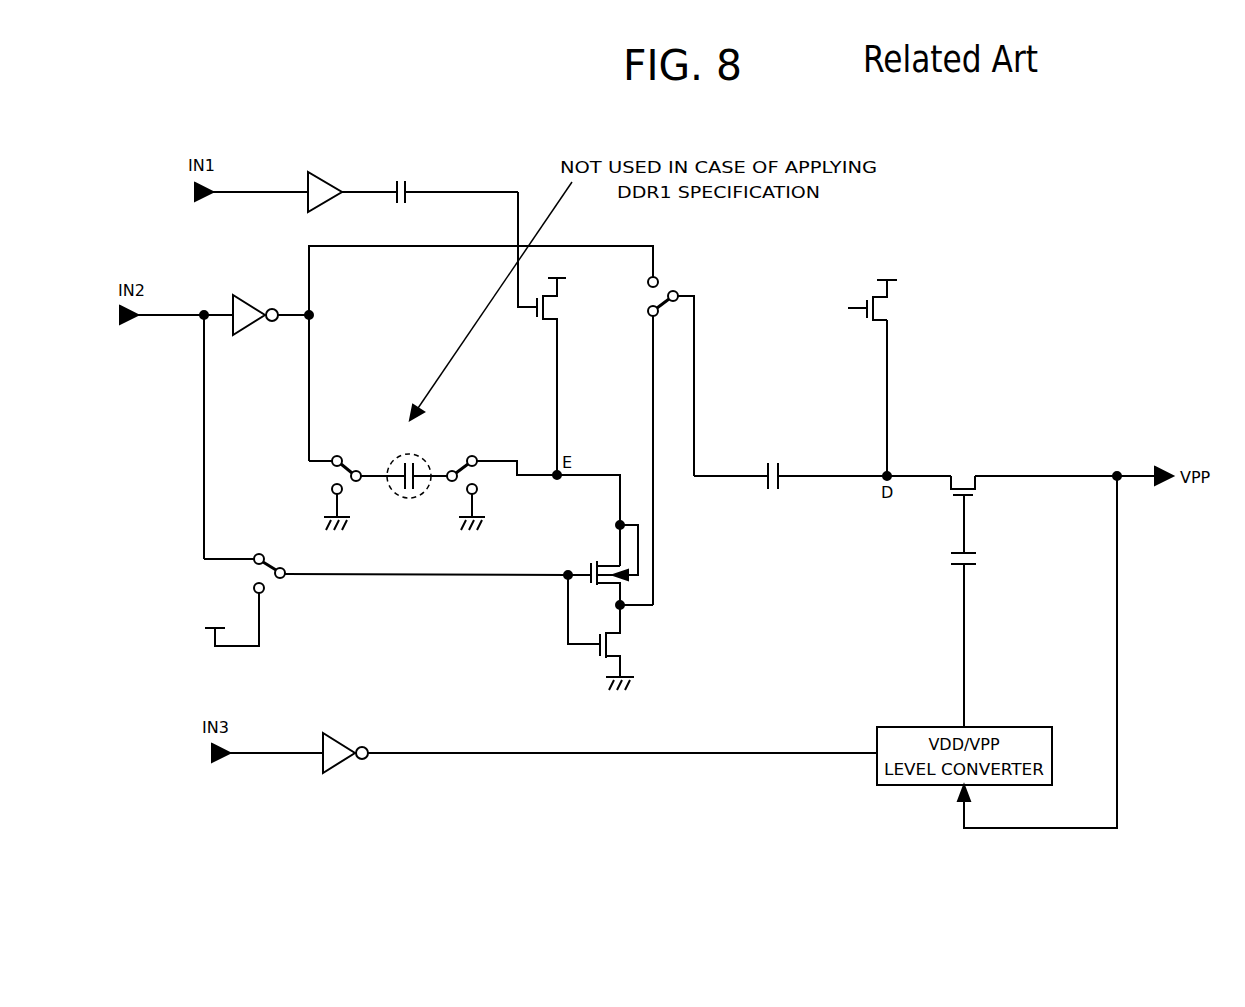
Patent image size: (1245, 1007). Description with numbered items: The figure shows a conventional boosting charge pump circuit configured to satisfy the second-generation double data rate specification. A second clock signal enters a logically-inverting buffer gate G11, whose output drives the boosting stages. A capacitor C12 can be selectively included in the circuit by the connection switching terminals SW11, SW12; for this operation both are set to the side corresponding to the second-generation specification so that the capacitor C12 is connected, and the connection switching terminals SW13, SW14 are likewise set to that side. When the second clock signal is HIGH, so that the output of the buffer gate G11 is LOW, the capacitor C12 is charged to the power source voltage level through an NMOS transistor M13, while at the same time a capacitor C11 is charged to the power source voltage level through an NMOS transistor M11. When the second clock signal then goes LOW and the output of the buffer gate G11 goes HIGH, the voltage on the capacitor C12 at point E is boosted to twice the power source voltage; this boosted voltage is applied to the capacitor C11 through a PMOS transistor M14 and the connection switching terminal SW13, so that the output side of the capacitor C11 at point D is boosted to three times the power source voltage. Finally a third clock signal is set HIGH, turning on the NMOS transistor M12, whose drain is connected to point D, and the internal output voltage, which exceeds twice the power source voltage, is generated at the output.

The logically-inverting buffer gate G11 is at (246, 301).
The NMOS transistor M11 is at (880, 309).
The NMOS transistor M12 is at (976, 490).
The NMOS transistor M13 is at (538, 323).
The PMOS transistor M14 is at (606, 560).
The capacitor C11 is at (771, 462).
The capacitor C12 is at (409, 462).
The connection switching terminal SW11 is at (323, 472).
The connection switching terminal SW12 is at (457, 455).
The connection switching terminal SW13 is at (662, 289).
The connection switching terminal SW14 is at (250, 573).